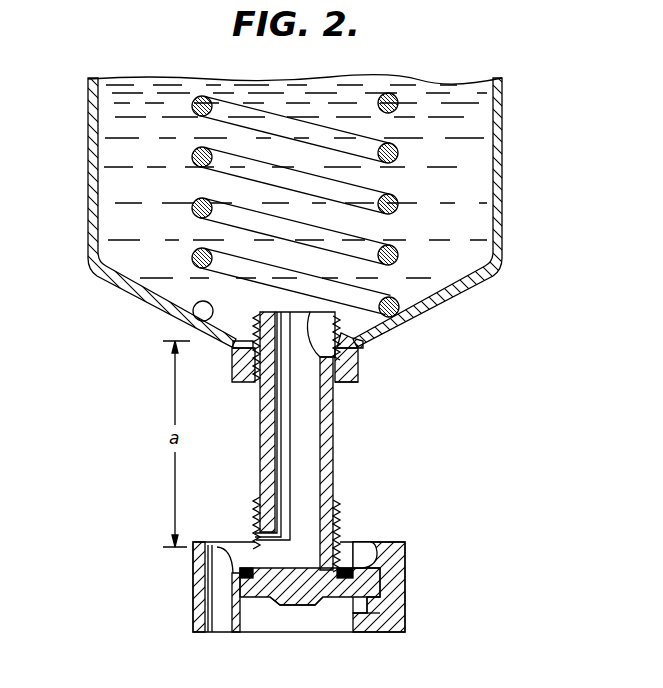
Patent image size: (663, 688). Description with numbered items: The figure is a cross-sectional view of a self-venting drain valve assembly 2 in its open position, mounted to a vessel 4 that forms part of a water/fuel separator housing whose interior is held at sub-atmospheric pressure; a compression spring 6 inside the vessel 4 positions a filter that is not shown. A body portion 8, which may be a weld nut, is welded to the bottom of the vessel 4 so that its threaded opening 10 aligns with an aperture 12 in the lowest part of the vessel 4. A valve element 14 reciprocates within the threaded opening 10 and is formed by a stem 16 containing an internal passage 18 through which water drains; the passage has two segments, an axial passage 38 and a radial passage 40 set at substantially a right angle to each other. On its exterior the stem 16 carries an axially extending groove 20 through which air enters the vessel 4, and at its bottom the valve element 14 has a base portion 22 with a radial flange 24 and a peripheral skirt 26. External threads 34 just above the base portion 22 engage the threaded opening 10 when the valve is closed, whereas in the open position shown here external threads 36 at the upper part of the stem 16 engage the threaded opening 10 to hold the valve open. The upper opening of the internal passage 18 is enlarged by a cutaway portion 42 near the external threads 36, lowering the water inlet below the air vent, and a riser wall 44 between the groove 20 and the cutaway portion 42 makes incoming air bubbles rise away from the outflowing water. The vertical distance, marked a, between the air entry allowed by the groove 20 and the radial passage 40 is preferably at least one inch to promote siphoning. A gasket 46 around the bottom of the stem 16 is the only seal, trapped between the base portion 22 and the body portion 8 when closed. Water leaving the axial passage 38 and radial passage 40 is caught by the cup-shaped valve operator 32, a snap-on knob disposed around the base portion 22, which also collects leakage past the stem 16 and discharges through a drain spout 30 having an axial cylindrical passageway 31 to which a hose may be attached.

The self-venting valve assembly 2 is at (390, 441).
The vessel 4 is at (447, 298).
The compression spring 6 is at (396, 208).
The body portion 8 is at (359, 366).
The threaded opening 10 is at (347, 380).
The aperture 12 is at (363, 341).
The valve element 14 is at (290, 605).
The stem 16 is at (326, 462).
The internal passage 18 is at (302, 428).
The groove 20 is at (262, 393).
The base portion 22 is at (353, 603).
The radial flange 24 is at (345, 592).
The peripheral skirt 26 is at (375, 605).
The drain spout 30 is at (213, 633).
The axial cylindrical passageway 31 is at (206, 600).
The valve operator 32 is at (405, 560).
The external threads 34 is at (336, 507).
The external threads 36 is at (253, 325).
The axial passage 38 is at (307, 411).
The radial passage 40 is at (260, 557).
The cutaway portion 42 is at (334, 326).
The riser wall 44 is at (283, 356).
The gasket 46 is at (343, 570).